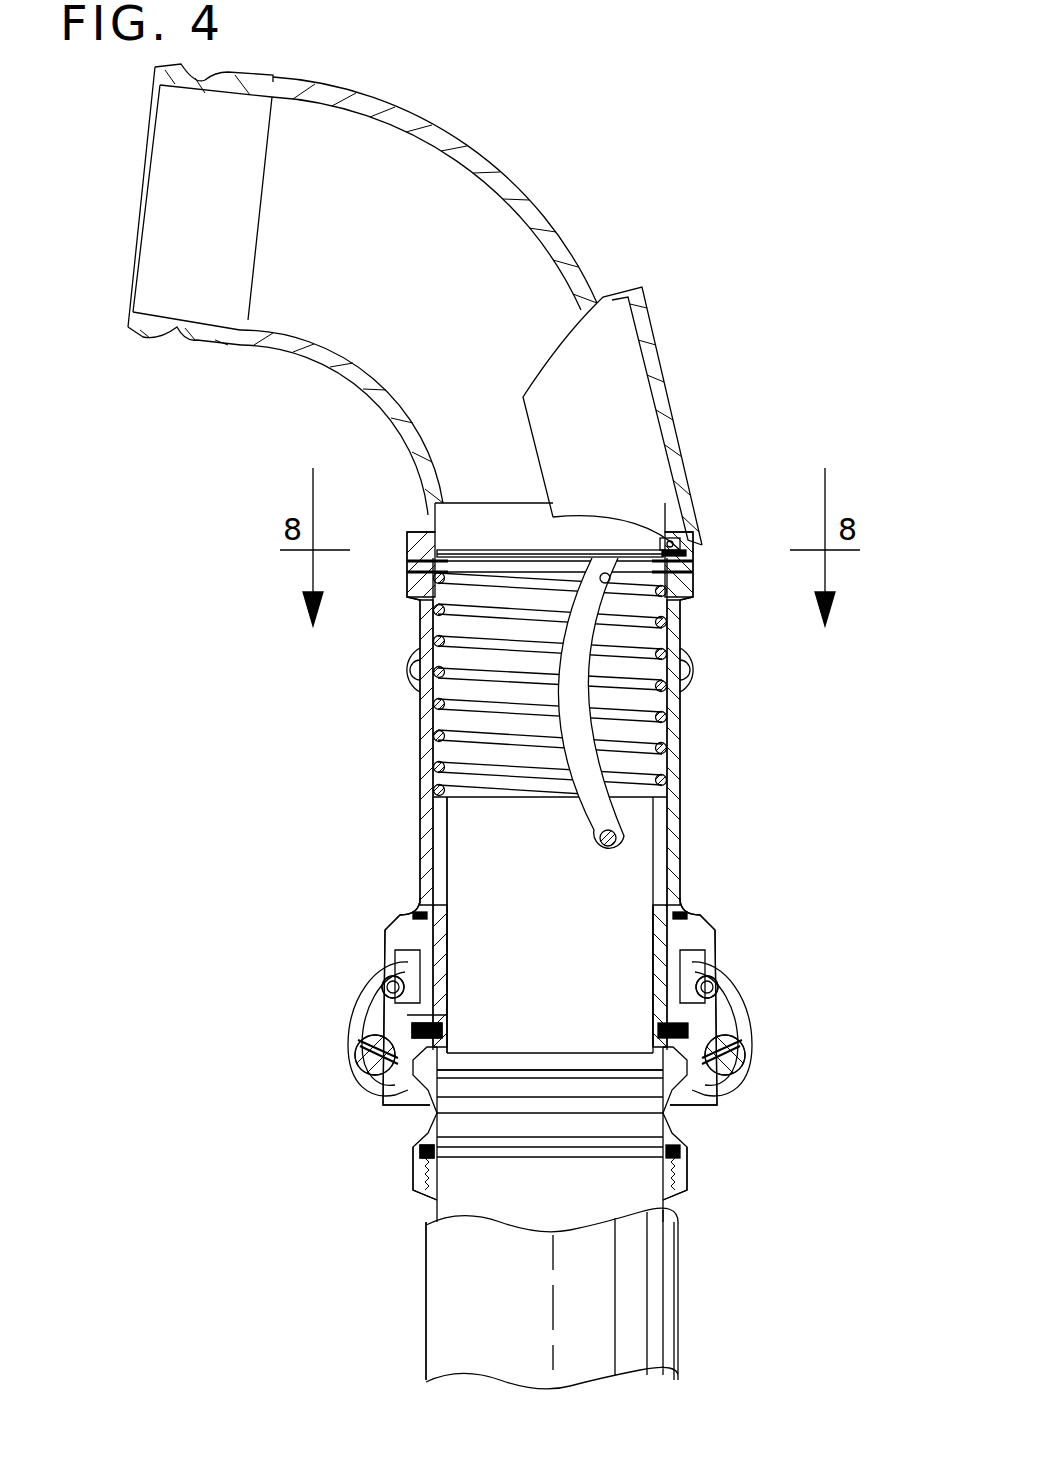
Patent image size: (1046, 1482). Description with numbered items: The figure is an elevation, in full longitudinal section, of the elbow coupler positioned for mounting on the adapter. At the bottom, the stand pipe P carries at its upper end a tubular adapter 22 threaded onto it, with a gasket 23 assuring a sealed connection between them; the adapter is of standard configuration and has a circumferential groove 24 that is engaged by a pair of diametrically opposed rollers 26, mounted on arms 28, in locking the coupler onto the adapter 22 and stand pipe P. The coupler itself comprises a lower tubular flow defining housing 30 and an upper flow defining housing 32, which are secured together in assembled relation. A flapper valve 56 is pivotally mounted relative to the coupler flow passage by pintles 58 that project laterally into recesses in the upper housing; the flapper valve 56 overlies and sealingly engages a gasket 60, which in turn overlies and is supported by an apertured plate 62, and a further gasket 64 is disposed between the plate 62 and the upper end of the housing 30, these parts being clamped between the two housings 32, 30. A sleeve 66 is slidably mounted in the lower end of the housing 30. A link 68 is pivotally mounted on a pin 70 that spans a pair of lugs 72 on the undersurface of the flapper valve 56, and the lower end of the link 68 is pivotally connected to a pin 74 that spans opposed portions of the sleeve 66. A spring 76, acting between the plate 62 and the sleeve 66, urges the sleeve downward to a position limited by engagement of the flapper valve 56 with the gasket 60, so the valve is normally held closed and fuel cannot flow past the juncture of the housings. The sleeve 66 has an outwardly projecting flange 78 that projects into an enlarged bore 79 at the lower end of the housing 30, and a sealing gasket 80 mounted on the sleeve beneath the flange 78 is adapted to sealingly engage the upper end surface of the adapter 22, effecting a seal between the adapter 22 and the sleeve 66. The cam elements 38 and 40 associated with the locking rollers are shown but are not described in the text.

The tubular adapter 22 is at (690, 1185).
The gasket 23 is at (410, 1150).
The circumferential groove 24 is at (700, 1110).
The rollers 26 is at (392, 965).
The arms 28 is at (745, 1003).
The lower tubular flow defining housing 30 is at (678, 775).
The upper flow defining housing 32 is at (560, 200).
The cam roller 38 is at (375, 1080).
The cam arm 40 is at (345, 1032).
The flapper valve 56 is at (495, 552).
The pintles 58 is at (668, 540).
The gasket 60 is at (688, 552).
The apertured plate 62 is at (693, 565).
The gasket 64 is at (688, 578).
The sleeve 66 is at (445, 882).
The link 68 is at (585, 795).
The pin 70 is at (605, 570).
The lugs 72 is at (585, 560).
The pin 74 is at (599, 840).
The spring 76 is at (510, 775).
The flange 78 is at (428, 1010).
The enlarged bore 79 is at (668, 945).
The sealing gasket 80 is at (445, 1028).
The stand pipe P is at (683, 1305).